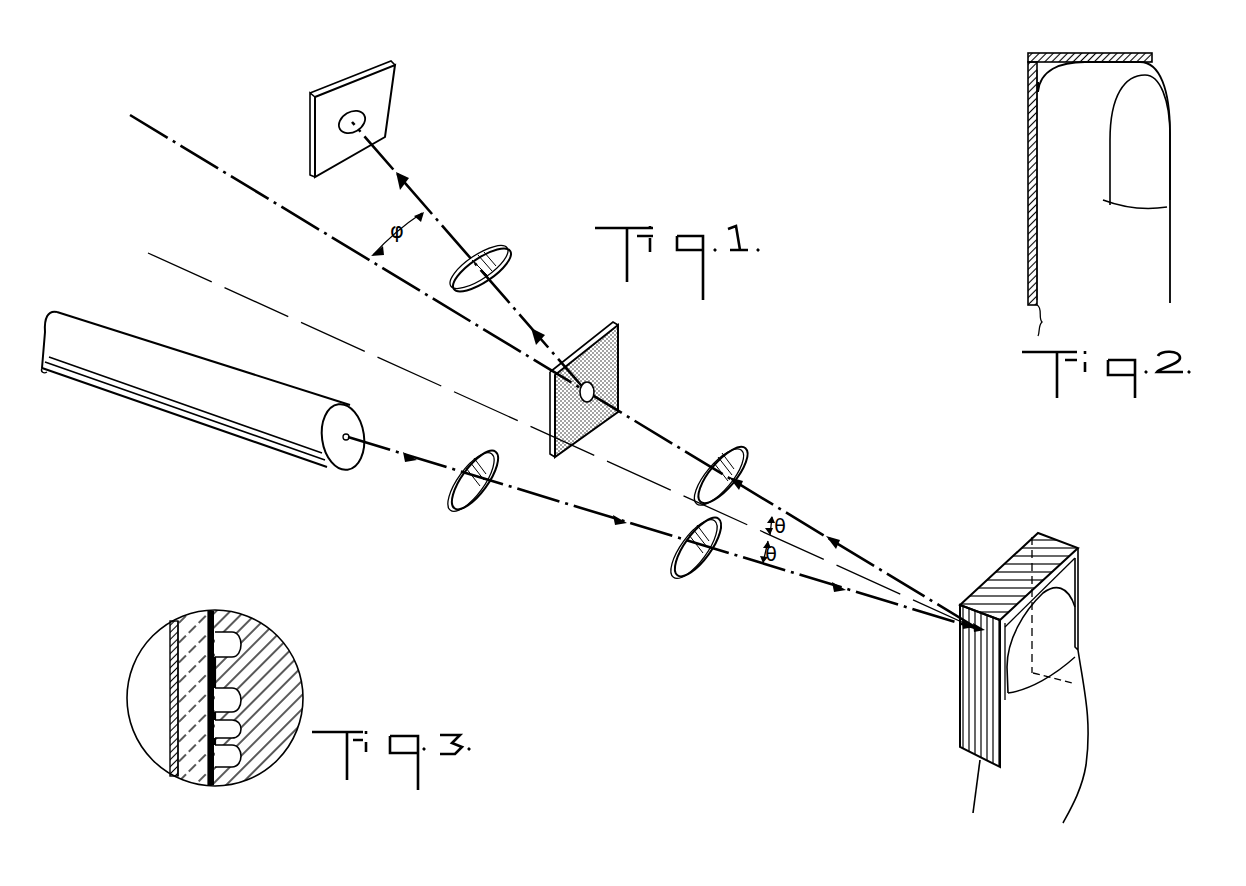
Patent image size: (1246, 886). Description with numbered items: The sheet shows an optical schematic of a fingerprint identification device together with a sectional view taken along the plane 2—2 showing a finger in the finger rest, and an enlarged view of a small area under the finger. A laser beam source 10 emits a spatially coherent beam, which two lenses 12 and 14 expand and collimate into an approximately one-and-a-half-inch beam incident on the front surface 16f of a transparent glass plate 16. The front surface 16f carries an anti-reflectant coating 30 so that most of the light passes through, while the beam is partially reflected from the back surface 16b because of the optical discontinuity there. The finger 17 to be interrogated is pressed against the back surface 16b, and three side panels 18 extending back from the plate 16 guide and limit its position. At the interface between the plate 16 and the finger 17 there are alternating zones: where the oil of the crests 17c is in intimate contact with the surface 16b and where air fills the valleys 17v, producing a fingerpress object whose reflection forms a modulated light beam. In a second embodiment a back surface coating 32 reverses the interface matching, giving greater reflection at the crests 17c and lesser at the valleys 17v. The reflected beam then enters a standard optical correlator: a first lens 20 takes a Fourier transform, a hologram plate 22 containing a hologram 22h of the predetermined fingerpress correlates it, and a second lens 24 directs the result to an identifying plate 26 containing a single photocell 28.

In FIG. 1, the laser beam source 10 is at (243, 443).
In FIG. 1, the lens 12 is at (465, 508).
In FIG. 1, the lens 14 is at (688, 577).
In FIG. 1, the transparent glass plate 16 is at (1021, 628).
In FIG. 2, the transparent glass plate 16 is at (1067, 173).
In FIG. 3, the transparent glass plate 16 is at (202, 680).
In FIG. 2, the front surface 16f is at (1028, 177).
In FIG. 3, the front surface 16f is at (170, 719).
In FIG. 2, the back surface 16b is at (1037, 233).
In FIG. 3, the back surface 16b is at (218, 637).
In FIG. 1, the finger 17 is at (1063, 703).
In FIG. 2, the finger 17 is at (1103, 133).
In FIG. 3, the finger 17 is at (287, 720).
In FIG. 3, the crests 17c is at (242, 752).
In FIG. 3, the valleys 17v is at (228, 770).
In FIG. 1, the side panels 18 is at (1055, 545).
In FIG. 2, the side panels 18 is at (1133, 53).
In FIG. 1, the first lens 20 is at (747, 452).
In FIG. 1, the hologram plate 22 is at (620, 389).
In FIG. 1, the hologram 22h is at (595, 389).
In FIG. 1, the second lens 24 is at (500, 252).
In FIG. 1, the identifying plate 26 is at (380, 119).
In FIG. 1, the photocell 28 is at (360, 111).
In FIG. 3, the anti-reflectant coating 30 is at (173, 622).
In FIG. 3, the back surface coating 32 is at (212, 610).
In FIG. 1, the plane 2— 2 is at (965, 552).